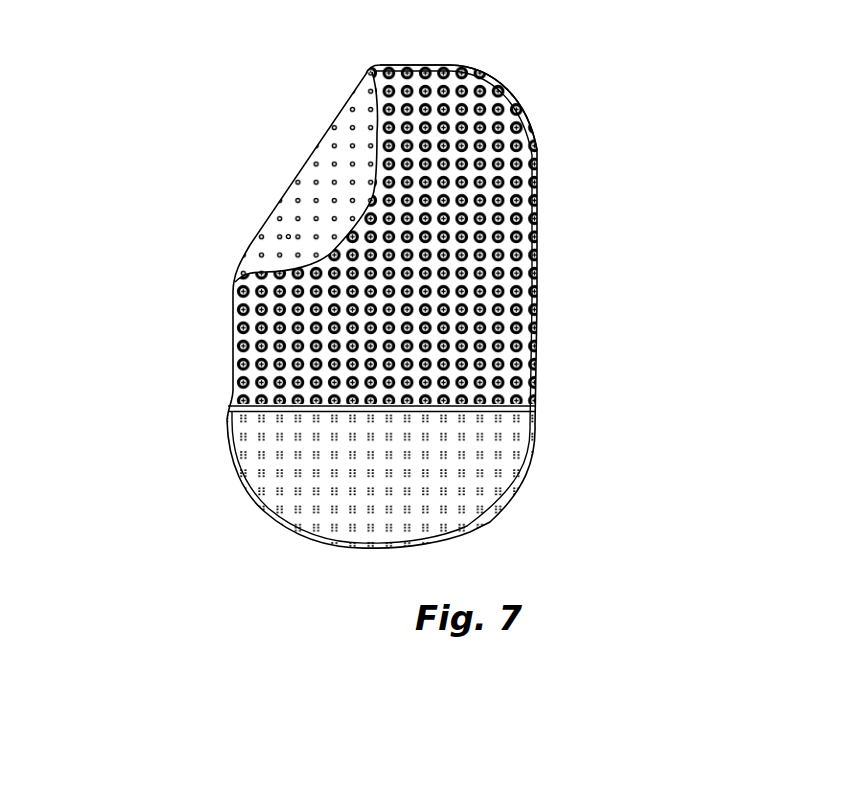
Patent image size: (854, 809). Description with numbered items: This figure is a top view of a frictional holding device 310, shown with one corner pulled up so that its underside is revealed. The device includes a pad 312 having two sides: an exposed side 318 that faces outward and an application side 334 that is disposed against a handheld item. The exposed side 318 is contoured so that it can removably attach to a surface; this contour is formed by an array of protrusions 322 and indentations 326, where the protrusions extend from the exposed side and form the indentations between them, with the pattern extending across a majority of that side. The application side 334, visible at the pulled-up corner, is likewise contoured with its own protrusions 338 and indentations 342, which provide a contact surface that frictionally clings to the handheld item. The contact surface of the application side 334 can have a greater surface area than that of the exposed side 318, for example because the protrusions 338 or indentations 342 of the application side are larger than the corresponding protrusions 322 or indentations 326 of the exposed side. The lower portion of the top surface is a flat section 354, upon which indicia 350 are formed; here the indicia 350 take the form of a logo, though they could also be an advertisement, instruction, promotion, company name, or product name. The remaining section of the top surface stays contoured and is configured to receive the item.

The frictional holding device 310 is at (372, 316).
The pad 312 is at (530, 365).
The exposed side 318 is at (505, 282).
The protrusions 322 is at (428, 102).
The indentations 326 is at (500, 118).
The application side 334 is at (273, 175).
The protrusions 338 is at (287, 236).
The indentations 342 is at (295, 207).
The indicia 350 is at (290, 473).
The flat section 354 is at (258, 440).